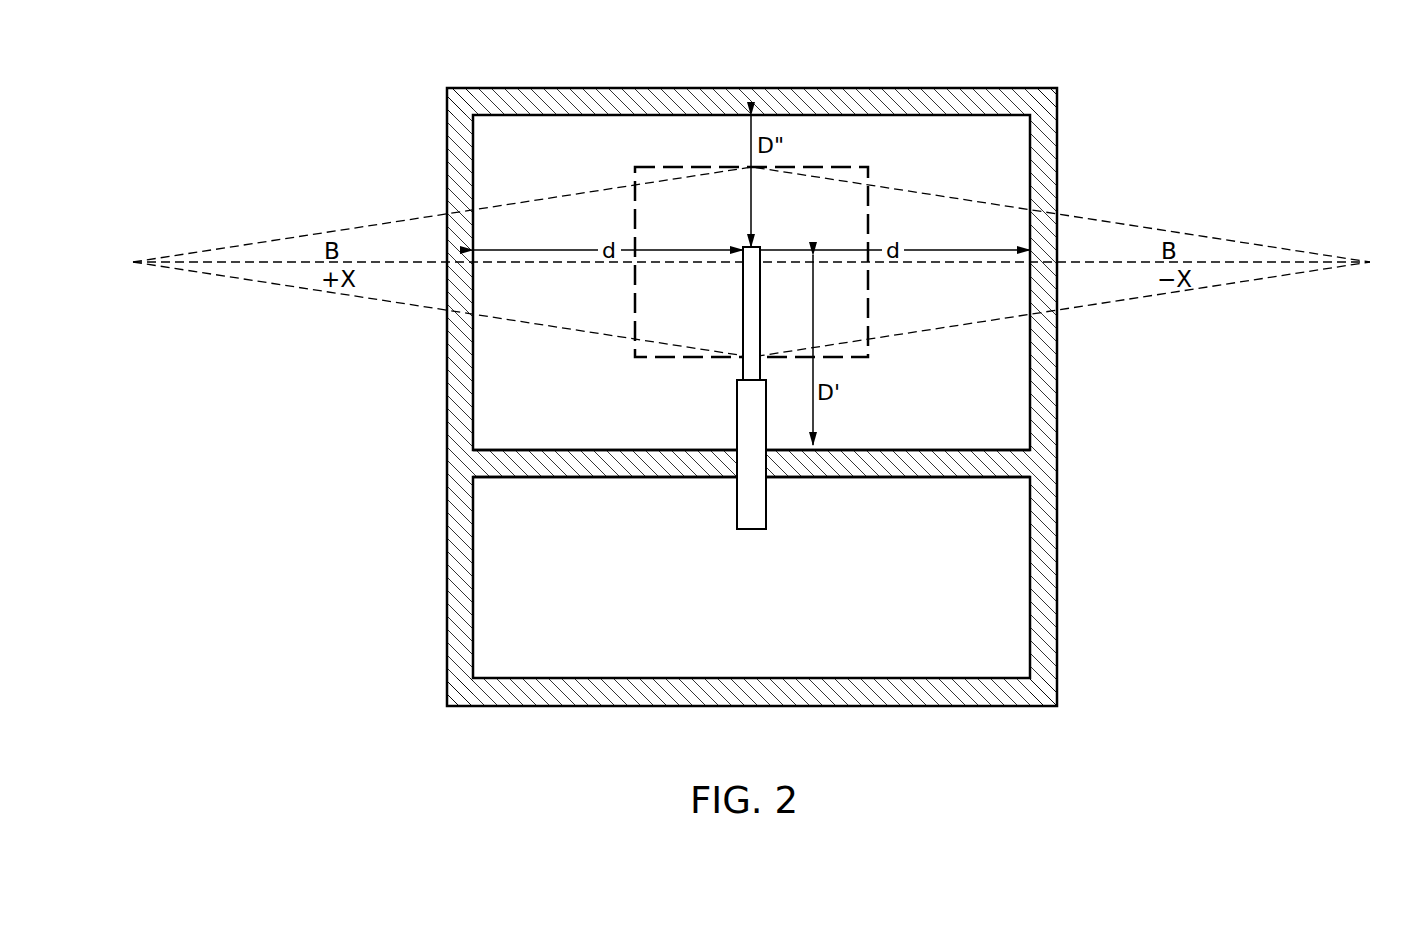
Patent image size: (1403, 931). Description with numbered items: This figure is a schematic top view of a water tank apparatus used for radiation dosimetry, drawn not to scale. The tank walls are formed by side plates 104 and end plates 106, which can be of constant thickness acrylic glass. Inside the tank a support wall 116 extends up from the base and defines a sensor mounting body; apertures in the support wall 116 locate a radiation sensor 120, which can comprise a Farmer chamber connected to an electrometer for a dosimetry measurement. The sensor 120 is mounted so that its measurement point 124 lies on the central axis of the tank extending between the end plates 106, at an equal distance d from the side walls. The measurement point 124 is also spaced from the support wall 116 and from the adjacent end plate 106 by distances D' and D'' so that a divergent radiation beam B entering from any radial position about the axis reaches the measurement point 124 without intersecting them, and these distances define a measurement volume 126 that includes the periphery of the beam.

The side plates 104 is at (447, 566).
The end plates 106 is at (752, 88).
The support wall 116 is at (897, 450).
The radiation sensor 120 is at (752, 529).
The measurement point 124 is at (758, 247).
The measurement volume 126 is at (825, 167).